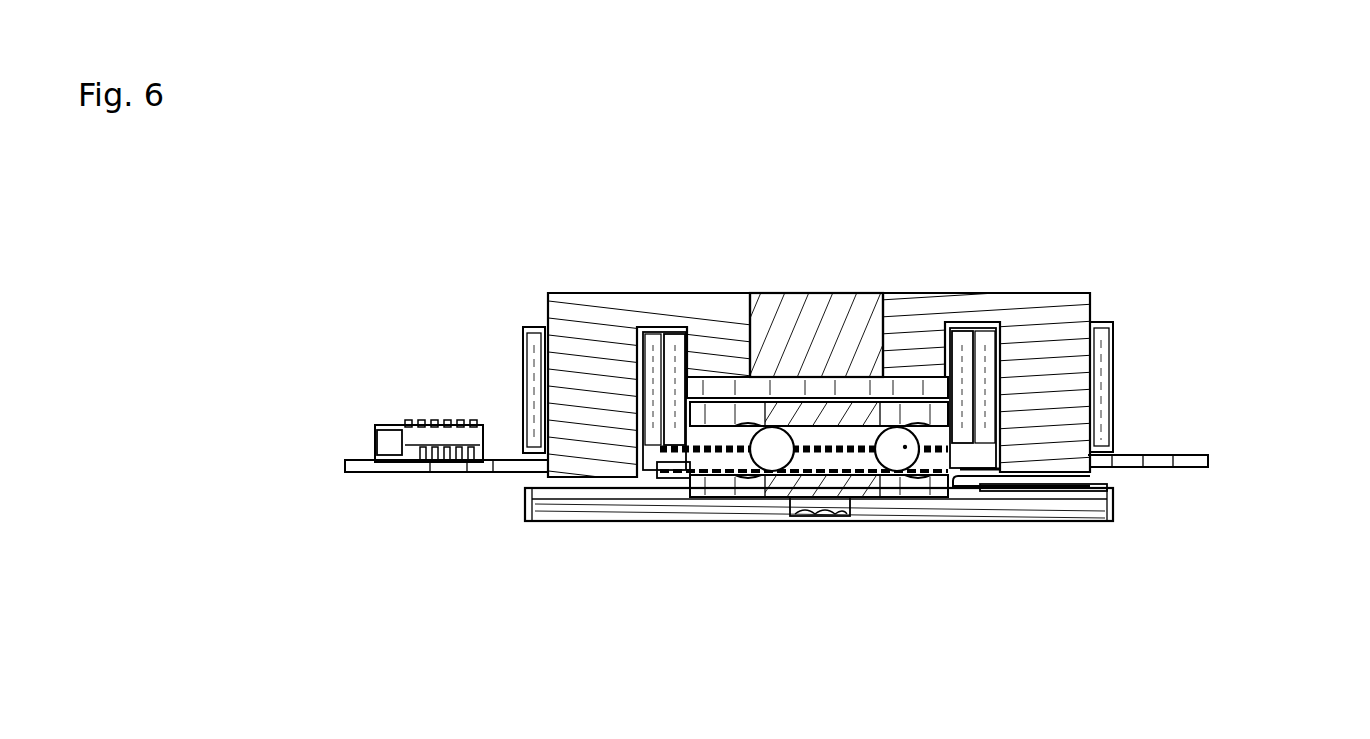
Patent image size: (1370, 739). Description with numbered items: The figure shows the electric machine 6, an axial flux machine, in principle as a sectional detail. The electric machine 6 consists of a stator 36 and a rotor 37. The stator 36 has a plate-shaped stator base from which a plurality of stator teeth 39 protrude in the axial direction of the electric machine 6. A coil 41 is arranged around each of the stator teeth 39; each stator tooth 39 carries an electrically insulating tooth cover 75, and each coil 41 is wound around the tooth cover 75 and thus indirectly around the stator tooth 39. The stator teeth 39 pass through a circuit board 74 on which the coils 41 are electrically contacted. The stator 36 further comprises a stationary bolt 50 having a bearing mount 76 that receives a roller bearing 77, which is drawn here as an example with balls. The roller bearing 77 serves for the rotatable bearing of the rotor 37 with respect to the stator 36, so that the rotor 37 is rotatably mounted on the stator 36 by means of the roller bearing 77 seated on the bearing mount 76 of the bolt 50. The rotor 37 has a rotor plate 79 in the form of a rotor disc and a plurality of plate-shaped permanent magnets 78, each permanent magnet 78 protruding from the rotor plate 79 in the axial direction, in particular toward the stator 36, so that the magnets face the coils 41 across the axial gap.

The electric machine 6 is at (1022, 185).
The stator 36 is at (1092, 292).
The rotor 37 is at (655, 532).
The stator teeth 39 is at (1060, 442).
The coil 41 is at (1103, 338).
The bolt 50 is at (855, 318).
The circuit board 74 is at (368, 475).
The tooth cover 75 is at (1098, 447).
The bearing mount 76 is at (726, 400).
The roller bearing 77 is at (933, 475).
The permanent magnets 78 is at (557, 493).
The rotor plate 79 is at (1055, 510).